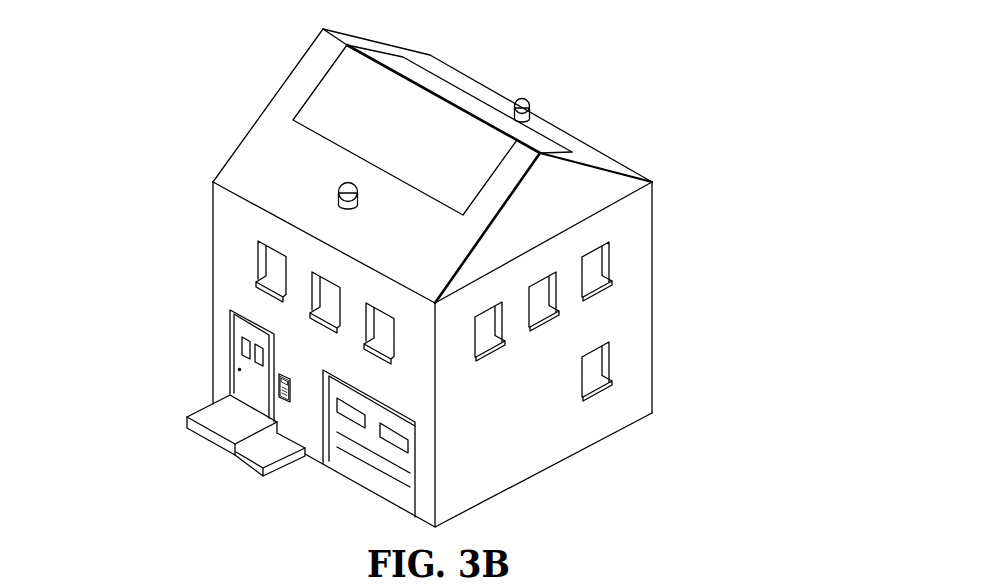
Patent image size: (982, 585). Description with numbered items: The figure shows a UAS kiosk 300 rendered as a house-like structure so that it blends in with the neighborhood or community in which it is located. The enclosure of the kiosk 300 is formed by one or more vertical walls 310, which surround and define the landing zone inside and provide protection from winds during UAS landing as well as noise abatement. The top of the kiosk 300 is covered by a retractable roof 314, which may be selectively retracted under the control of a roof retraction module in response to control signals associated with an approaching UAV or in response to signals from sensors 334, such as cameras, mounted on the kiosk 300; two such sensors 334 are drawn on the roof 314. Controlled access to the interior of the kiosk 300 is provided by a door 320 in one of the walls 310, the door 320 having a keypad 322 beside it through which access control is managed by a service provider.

The UAS kiosk 300 is at (203, 57).
The vertical walls 310 is at (213, 244).
The retractable roof 314 is at (468, 103).
The door 320 is at (245, 382).
The keypad 322 is at (279, 391).
The sensors 334 is at (338, 197).